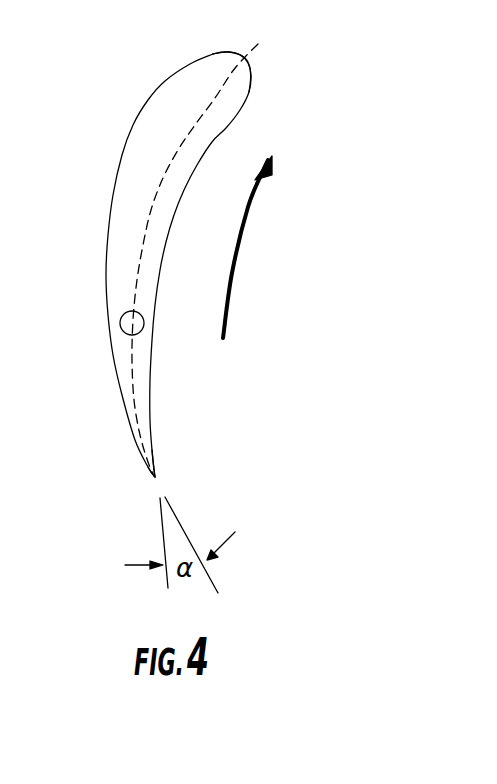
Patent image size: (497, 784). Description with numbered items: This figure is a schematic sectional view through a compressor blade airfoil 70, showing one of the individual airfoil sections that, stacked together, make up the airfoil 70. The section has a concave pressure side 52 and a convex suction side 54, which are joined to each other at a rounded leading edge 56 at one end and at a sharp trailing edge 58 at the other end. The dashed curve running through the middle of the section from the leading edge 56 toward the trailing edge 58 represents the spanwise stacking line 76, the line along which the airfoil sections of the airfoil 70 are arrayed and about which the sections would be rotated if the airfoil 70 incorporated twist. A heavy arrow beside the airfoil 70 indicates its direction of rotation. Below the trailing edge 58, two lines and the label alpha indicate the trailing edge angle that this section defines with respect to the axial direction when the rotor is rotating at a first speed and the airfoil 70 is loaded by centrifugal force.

The pressure side 52 is at (181, 200).
The suction side 54 is at (158, 87).
The leading edge 56 is at (250, 80).
The trailing edge 58 is at (156, 479).
The airfoil 70 is at (286, 120).
The spanwise stacking line 76 is at (142, 238).